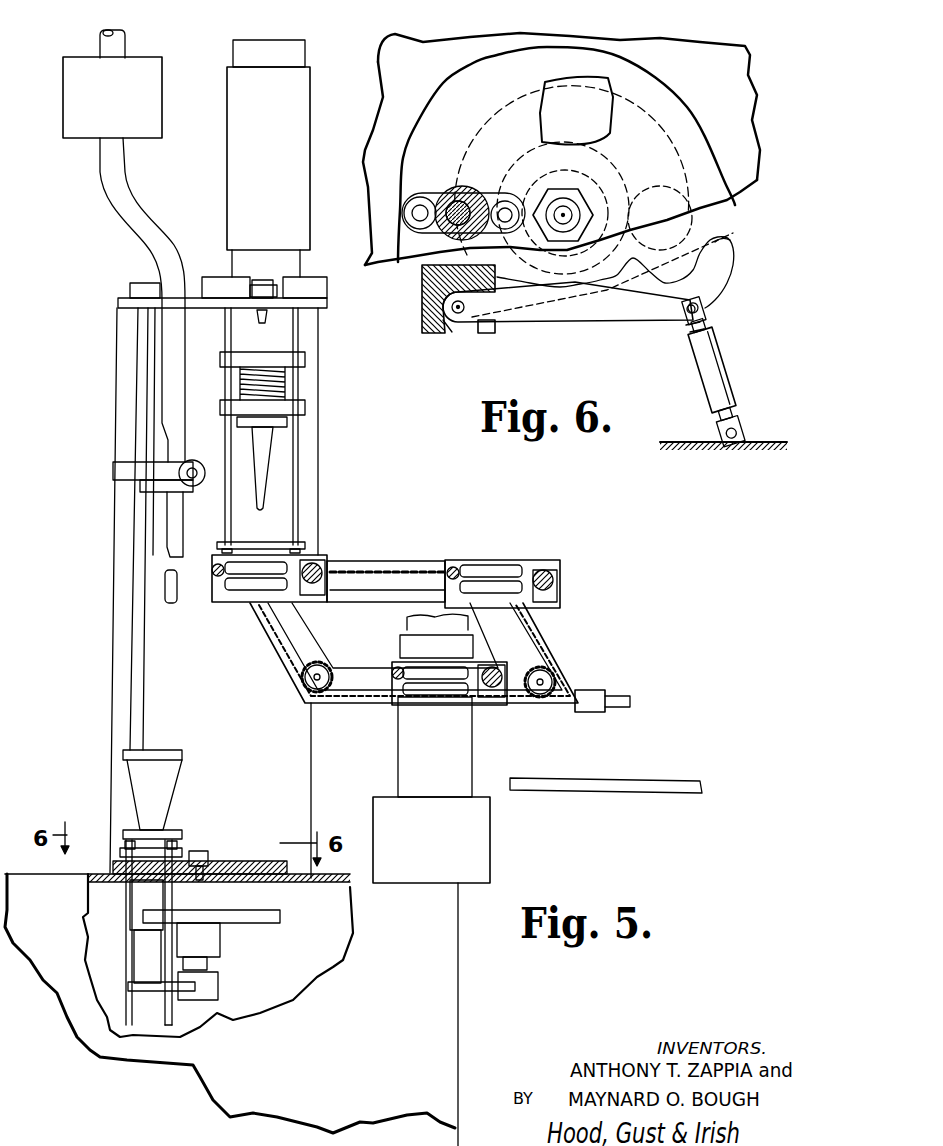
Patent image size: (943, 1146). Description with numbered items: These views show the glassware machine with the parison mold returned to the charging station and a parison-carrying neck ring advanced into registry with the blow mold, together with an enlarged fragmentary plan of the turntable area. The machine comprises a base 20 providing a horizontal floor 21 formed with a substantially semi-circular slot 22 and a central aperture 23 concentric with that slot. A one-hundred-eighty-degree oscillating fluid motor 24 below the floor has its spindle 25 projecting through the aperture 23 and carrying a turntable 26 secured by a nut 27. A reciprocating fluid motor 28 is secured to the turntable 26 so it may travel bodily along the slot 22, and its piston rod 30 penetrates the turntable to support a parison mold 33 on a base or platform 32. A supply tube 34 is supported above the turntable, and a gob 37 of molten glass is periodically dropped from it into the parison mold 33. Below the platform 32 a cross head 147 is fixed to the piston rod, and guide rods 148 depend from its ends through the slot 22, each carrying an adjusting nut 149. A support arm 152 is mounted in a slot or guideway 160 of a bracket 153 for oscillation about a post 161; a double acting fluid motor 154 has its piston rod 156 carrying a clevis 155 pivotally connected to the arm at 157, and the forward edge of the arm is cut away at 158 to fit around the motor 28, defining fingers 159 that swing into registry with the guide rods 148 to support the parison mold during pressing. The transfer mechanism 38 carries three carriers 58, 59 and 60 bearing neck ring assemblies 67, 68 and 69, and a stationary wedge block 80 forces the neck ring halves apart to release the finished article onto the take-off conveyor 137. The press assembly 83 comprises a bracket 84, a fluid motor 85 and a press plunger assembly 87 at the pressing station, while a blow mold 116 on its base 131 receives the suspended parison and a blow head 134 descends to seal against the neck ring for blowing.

In FIG. 6, the base 20 is at (693, 452).
In FIG. 5, the base 20 is at (428, 1037).
In FIG. 6, the horizontal floor 21 is at (760, 110).
In FIG. 5, the horizontal floor 21 is at (315, 890).
In FIG. 6, the semi-circular slot 22 is at (590, 100).
In FIG. 5, the semi-circular slot 22 is at (265, 885).
In FIG. 5, the central aperture 23 is at (185, 882).
In FIG. 6, the oscillating fluid motor 24 is at (605, 150).
In FIG. 5, the oscillating fluid motor 24 is at (213, 937).
In FIG. 6, the spindle 25 is at (565, 213).
In FIG. 5, the spindle 25 is at (207, 858).
In FIG. 6, the turntable 26 is at (683, 115).
In FIG. 5, the turntable 26 is at (245, 863).
In FIG. 6, the nut 27 is at (550, 207).
In FIG. 6, the reciprocating fluid motor 28 is at (448, 160).
In FIG. 5, the reciprocating fluid motor 28 is at (145, 950).
In FIG. 6, the piston rod 30 is at (460, 192).
In FIG. 5, the base or platform 32 is at (172, 832).
In FIG. 5, the parison mold 33 is at (182, 765).
In FIG. 5, the supply tube 34 is at (178, 517).
In FIG. 5, the gob 37 is at (178, 592).
In FIG. 5, the transfer mechanism 38 is at (400, 548).
In FIG. 5, the carrier 58 is at (490, 705).
In FIG. 5, the carrier 59 is at (545, 560).
In FIG. 5, the carrier 60 is at (308, 557).
In FIG. 5, the neck ring assembly 67 is at (407, 690).
In FIG. 5, the neck ring assembly 68 is at (463, 588).
In FIG. 5, the neck ring assembly 69 is at (233, 592).
In FIG. 5, the wedge block 80 is at (590, 692).
In FIG. 5, the press assembly 83 is at (210, 225).
In FIG. 5, the bracket 84 is at (320, 305).
In FIG. 5, the fluid motor 85 is at (232, 148).
In FIG. 5, the press plunger assembly 87 is at (308, 430).
In FIG. 5, the blow mold 116 is at (398, 742).
In FIG. 5, the base 131 is at (490, 840).
In FIG. 5, the blow head 134 is at (407, 647).
In FIG. 5, the take-off conveyor 137 is at (625, 785).
In FIG. 6, the cross head 147 is at (427, 193).
In FIG. 5, the cross head 147 is at (125, 852).
In FIG. 6, the guide rods 148 is at (410, 233).
In FIG. 5, the guide rods 148 is at (175, 1013).
In FIG. 6, the nut 149 is at (410, 193).
In FIG. 6, the support arm 152 is at (600, 320).
In FIG. 5, the support arm 152 is at (250, 922).
In FIG. 6, the bracket 153 is at (422, 300).
In FIG. 6, the double acting fluid motor 154 is at (736, 356).
In FIG. 6, the clevis 155 is at (690, 328).
In FIG. 6, the piston rod 156 is at (697, 330).
In FIG. 6, the pivotal connection 157 is at (712, 297).
In FIG. 6, the cut-away 158 is at (693, 270).
In FIG. 6, the fingers 159 is at (730, 240).
In FIG. 6, the slot or guideway 160 is at (457, 330).
In FIG. 6, the post 161 is at (477, 322).